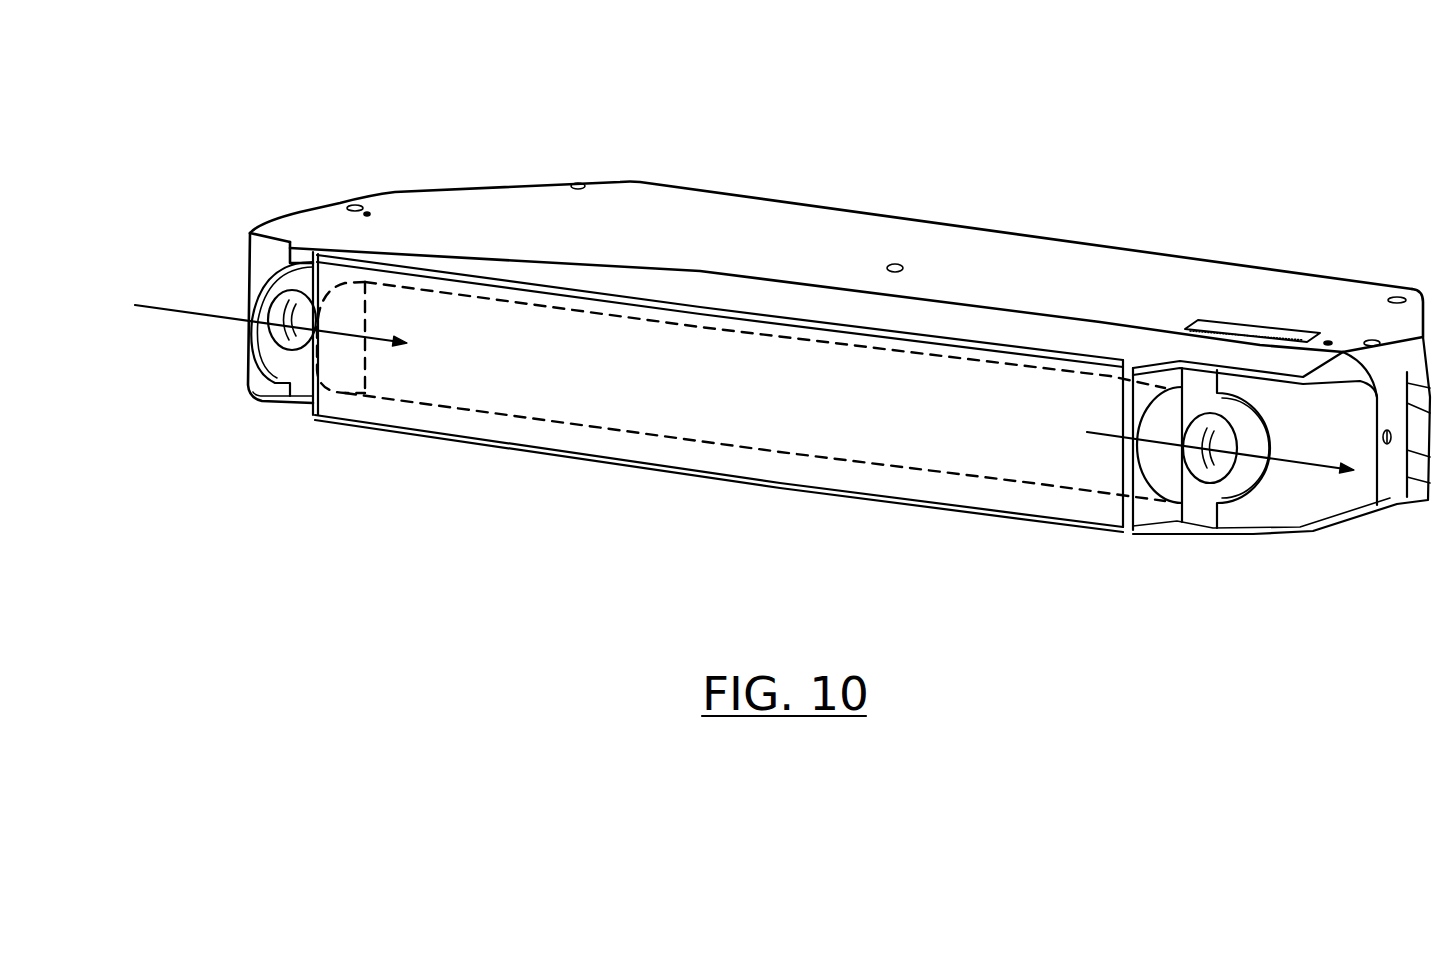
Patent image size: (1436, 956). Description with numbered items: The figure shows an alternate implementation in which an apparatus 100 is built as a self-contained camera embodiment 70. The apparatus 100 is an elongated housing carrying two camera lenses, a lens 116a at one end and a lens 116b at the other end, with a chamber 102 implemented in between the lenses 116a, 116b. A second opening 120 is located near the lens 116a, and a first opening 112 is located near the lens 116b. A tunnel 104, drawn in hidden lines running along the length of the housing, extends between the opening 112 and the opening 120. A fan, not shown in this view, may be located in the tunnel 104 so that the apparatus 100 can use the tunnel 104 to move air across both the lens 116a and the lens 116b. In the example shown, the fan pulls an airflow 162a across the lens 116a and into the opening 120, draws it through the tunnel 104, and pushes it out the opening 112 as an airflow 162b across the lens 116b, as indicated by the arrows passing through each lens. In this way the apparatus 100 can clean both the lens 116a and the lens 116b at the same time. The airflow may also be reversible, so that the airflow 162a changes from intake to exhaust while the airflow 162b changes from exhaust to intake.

The self-contained camera embodiment 70 is at (491, 56).
The apparatus 100 is at (284, 218).
The chamber 102 is at (523, 448).
The tunnel 104 is at (750, 396).
The first opening 112 is at (1160, 527).
The lens 116a is at (307, 352).
The lens 116b is at (1200, 487).
The second opening 120 is at (353, 372).
The airflow 162a is at (213, 318).
The airflow 162b is at (1328, 440).